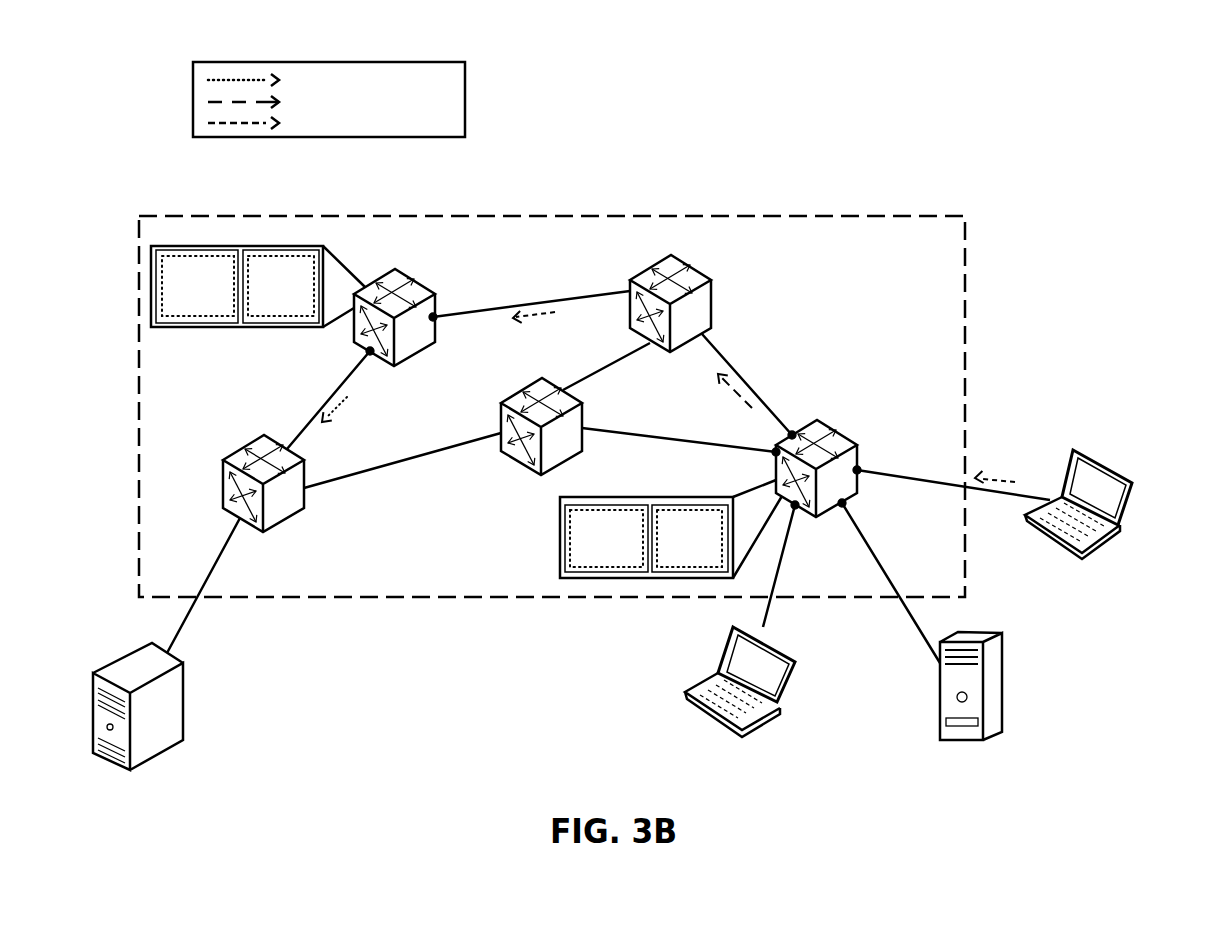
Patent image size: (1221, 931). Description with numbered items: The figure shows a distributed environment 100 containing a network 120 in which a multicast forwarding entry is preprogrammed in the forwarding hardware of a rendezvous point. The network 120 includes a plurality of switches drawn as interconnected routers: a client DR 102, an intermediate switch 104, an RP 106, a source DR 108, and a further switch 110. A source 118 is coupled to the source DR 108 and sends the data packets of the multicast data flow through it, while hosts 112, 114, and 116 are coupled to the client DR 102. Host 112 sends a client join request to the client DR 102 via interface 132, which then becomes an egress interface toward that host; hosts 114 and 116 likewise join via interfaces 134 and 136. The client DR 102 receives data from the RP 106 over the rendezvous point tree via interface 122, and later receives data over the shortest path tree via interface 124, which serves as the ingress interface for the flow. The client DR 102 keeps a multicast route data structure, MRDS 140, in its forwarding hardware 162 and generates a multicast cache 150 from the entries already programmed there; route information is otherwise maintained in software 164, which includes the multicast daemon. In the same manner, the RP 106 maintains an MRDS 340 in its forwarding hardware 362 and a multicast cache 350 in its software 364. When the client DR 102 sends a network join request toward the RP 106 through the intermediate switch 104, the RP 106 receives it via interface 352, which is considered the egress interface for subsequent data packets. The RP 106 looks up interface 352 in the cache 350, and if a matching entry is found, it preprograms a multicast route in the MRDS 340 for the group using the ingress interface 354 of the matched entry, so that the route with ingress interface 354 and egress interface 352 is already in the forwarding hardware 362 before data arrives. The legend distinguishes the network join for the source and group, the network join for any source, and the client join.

The distributed environment 100 is at (1079, 116).
The client DR 102 is at (827, 484).
The intermediate switch 104 is at (693, 269).
The rendezvous point (RP) 106 is at (420, 330).
The source DR 108 is at (288, 520).
The switch 110 is at (582, 404).
The host 112 is at (772, 717).
The host 114 is at (940, 692).
The host 116 is at (1103, 547).
The source 118 is at (183, 703).
The network 120 is at (967, 400).
The interface 122 is at (792, 435).
The ingress interface 124 is at (776, 452).
The egress interface 132 is at (795, 505).
The egress interface 134 is at (842, 503).
The egress interface 136 is at (857, 470).
The multicast route data structure (MRDS) 140 is at (620, 561).
The multicast cache 150 is at (689, 538).
The forwarding hardware 162 is at (610, 573).
The software 164 is at (692, 572).
The MRDS 340 is at (212, 308).
The multicast cache 350 is at (281, 286).
The interface 352 is at (433, 317).
The ingress interface 354 is at (370, 351).
The forwarding hardware 362 is at (222, 321).
The software 364 is at (283, 323).